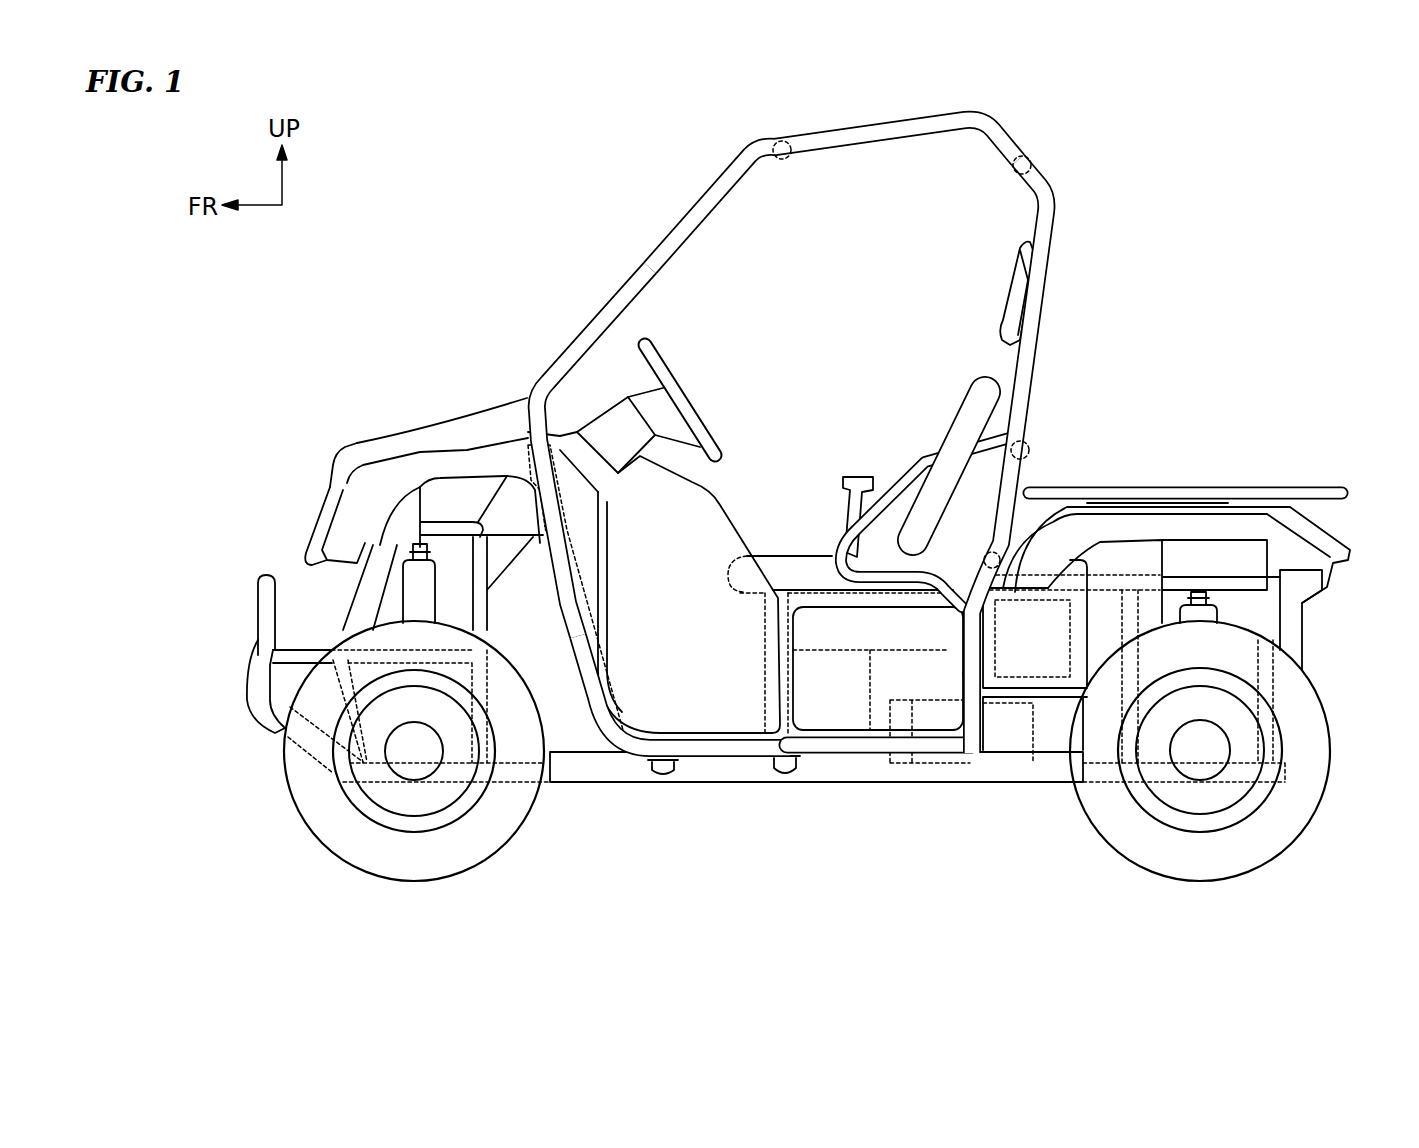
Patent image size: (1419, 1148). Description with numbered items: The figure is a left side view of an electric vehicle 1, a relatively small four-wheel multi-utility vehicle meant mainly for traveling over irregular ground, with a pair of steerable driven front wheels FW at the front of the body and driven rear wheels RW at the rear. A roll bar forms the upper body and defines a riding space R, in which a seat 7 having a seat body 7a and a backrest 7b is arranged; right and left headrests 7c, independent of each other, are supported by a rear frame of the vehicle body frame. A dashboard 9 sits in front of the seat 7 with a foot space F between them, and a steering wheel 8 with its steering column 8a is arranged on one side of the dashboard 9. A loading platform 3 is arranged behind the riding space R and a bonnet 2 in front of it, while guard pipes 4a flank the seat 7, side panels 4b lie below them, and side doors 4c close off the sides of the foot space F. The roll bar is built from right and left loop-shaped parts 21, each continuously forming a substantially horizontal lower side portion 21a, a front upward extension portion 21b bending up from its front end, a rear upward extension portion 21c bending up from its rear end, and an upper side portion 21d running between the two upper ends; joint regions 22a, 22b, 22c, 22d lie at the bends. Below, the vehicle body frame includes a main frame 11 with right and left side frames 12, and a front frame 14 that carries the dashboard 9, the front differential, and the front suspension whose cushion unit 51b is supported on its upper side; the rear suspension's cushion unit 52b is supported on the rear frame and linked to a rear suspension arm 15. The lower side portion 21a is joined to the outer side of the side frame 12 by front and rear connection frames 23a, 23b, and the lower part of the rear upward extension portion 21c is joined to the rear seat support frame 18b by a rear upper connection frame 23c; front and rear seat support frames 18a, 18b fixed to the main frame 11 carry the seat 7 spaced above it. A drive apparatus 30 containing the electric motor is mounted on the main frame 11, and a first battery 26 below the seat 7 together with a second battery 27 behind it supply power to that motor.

The electric vehicle 1 is at (526, 228).
The bonnet 2 is at (392, 440).
The loading platform 3 is at (1296, 487).
The guard pipe 4a is at (900, 467).
The side panel 4b is at (826, 712).
The side door 4c is at (713, 510).
The seat 7 is at (972, 383).
The seat body 7a is at (797, 556).
The backrest 7b is at (938, 432).
The headrest 7c is at (1003, 262).
The steering wheel 8 is at (710, 410).
The steering column 8a is at (637, 428).
The dashboard 9 is at (586, 488).
The main frame 11 is at (591, 786).
The side frame 12 is at (720, 773).
The front frame 14 is at (349, 613).
The rear suspension 15 is at (1305, 642).
The front seat support frame 18a is at (762, 740).
The rear seat support frame 18b is at (932, 712).
The loop-shaped part 21 is at (705, 197).
The lower side portion 21a is at (700, 747).
The front upward extension portion 21b is at (537, 390).
The rear upward extension portion 21c is at (1036, 372).
The upper side portion 21d is at (917, 125).
The joint 22a is at (782, 140).
The joint 22b is at (1030, 158).
The joint 22c is at (1000, 553).
The joint 22d is at (560, 520).
The front connection frame 23a is at (663, 773).
The rear connection frame 23b is at (785, 772).
The rear upper connection frame 23c is at (971, 685).
The first battery 26 is at (882, 722).
The second battery 27 is at (1045, 672).
The drive apparatus 30 is at (1003, 752).
The front cushion unit 51b is at (410, 580).
The rear cushion unit 52b is at (1208, 608).
The foot space F is at (682, 603).
The riding space R is at (875, 190).
The front wheel FW is at (305, 805).
The rear wheel RW is at (1318, 790).